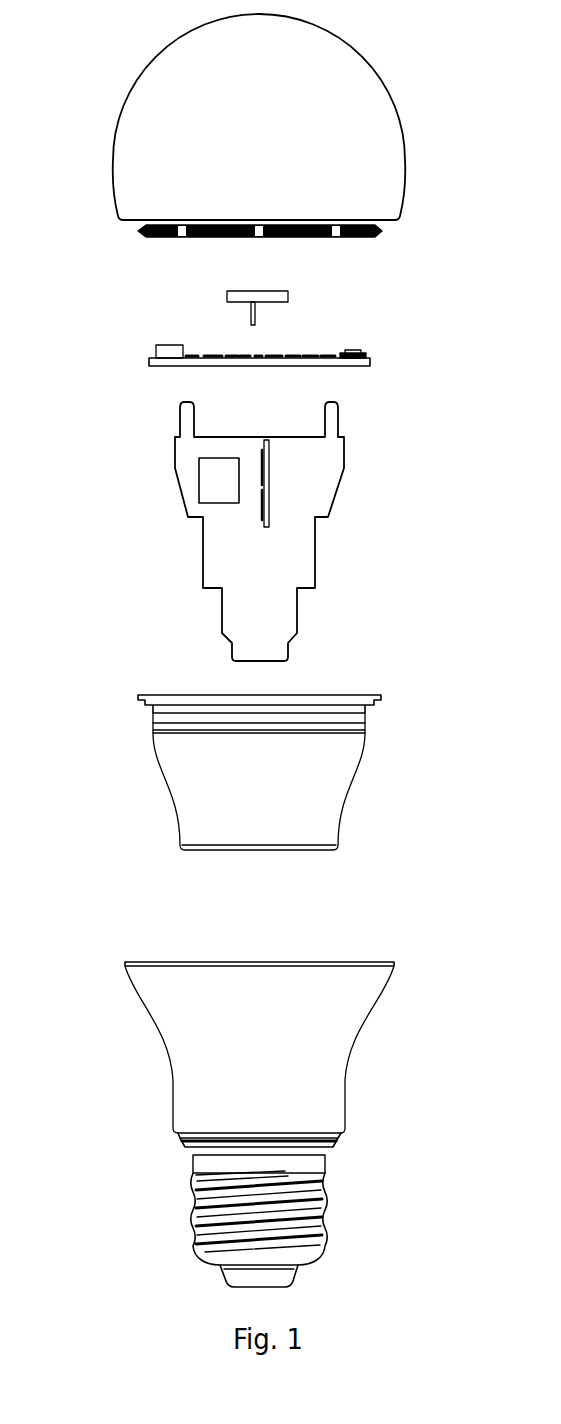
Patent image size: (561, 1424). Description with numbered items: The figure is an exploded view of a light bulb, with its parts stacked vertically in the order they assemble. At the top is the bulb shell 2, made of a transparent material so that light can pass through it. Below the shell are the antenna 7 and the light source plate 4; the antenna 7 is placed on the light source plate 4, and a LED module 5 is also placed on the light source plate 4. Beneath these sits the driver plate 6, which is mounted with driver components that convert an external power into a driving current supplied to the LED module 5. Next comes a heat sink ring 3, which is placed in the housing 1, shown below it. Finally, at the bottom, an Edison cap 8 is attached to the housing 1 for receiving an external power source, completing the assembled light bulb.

The housing 1 is at (327, 1073).
The bulb shell 2 is at (388, 158).
The heat sink ring 3 is at (327, 767).
The light source plate 4 is at (370, 362).
The LED module 5 is at (155, 356).
The driver plate 6 is at (218, 538).
The antenna 7 is at (288, 294).
The Edison cap 8 is at (320, 1218).